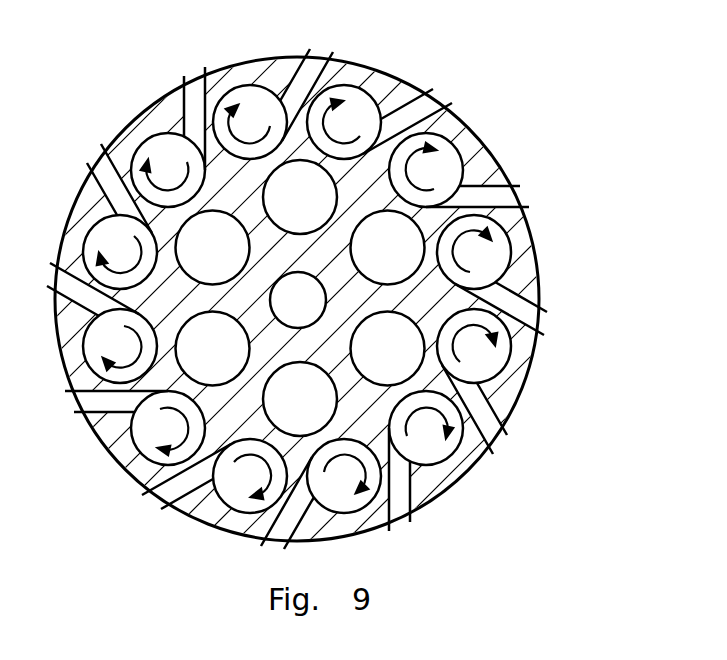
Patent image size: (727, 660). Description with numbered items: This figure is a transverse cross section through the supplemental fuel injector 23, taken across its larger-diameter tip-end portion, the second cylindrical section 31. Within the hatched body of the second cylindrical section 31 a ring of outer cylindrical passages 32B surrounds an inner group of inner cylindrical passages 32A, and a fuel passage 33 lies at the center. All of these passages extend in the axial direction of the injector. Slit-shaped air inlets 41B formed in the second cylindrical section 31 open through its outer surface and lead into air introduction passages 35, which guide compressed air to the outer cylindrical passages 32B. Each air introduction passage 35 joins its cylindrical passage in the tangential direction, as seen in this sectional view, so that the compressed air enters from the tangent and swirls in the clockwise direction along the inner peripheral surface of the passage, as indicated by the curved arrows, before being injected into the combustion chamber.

The supplemental fuel injector 23 is at (363, 330).
The second cylindrical section 31 is at (537, 287).
The inner cylindrical passages 32A is at (318, 178).
The outer cylindrical passages 32B is at (253, 102).
The fuel passage 33 is at (287, 297).
The air introduction passages 35 is at (190, 105).
The air inlets 41B is at (448, 110).